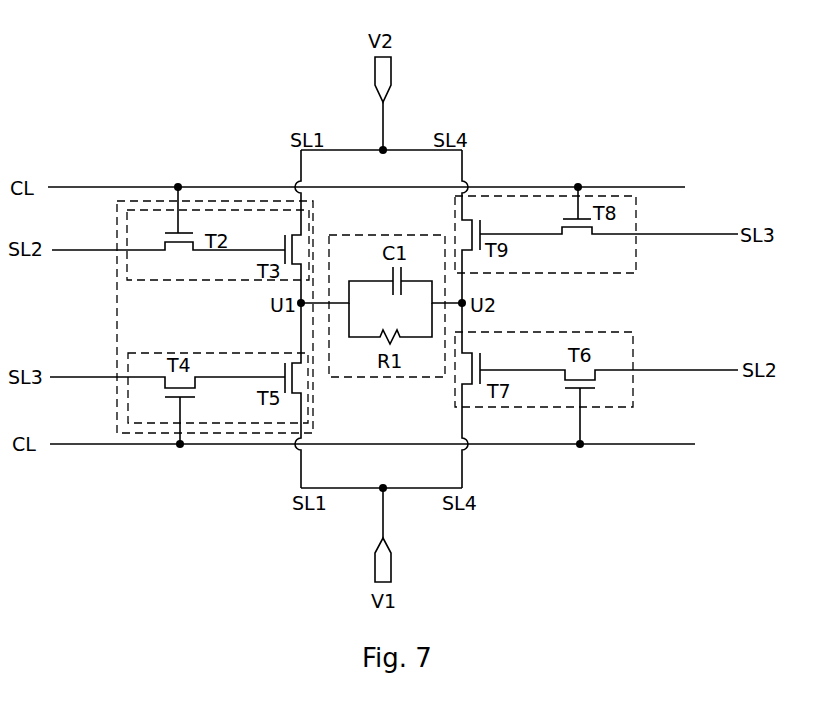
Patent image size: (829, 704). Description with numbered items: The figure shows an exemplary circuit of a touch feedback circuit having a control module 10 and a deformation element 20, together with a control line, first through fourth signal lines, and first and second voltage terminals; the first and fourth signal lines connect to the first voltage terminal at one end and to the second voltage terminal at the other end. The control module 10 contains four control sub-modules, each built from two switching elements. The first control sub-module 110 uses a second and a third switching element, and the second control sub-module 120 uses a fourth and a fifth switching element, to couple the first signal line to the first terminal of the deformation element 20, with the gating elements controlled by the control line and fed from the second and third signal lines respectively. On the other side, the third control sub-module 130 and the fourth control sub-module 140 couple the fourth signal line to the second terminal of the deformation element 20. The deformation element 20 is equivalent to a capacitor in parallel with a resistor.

The control module 10 is at (117, 288).
The first control sub-module 110 is at (202, 280).
The second control sub-module 120 is at (198, 353).
The deformation element 20 is at (350, 377).
The third control sub-module 130 is at (605, 407).
The fourth control sub-module 140 is at (593, 273).